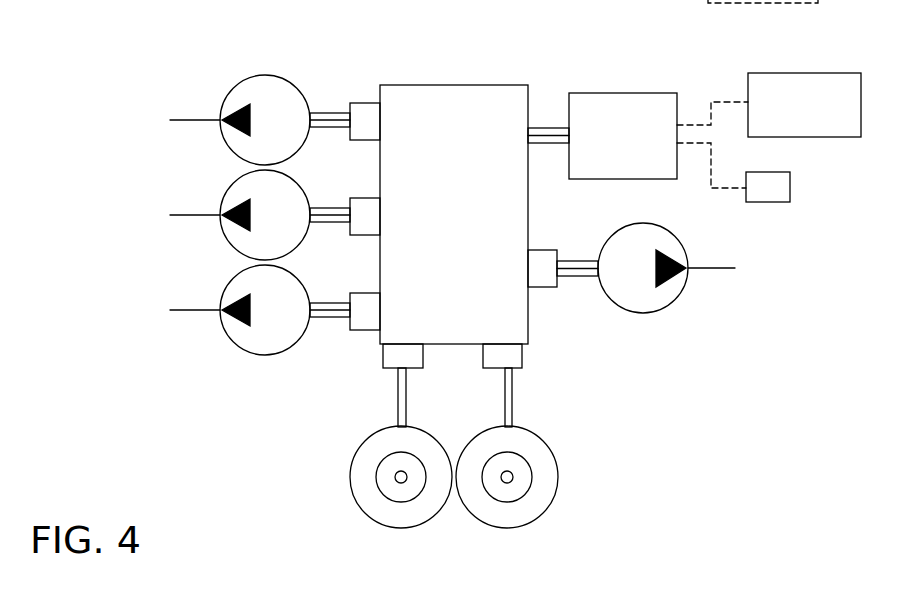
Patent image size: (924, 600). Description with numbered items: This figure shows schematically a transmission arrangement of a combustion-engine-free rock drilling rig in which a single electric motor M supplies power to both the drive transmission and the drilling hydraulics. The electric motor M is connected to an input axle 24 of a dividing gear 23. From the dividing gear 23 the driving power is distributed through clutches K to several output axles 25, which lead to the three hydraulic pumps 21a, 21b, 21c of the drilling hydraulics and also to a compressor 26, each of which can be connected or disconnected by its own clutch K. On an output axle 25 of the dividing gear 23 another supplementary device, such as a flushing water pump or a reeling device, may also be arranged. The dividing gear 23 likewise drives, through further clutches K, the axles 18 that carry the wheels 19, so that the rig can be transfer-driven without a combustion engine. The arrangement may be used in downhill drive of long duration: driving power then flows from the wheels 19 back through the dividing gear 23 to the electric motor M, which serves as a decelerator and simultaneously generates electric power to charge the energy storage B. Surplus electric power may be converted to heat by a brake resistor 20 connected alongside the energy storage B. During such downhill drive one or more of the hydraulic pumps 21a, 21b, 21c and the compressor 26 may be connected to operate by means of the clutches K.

The axle 18 is at (398, 403).
The wheels 19 is at (380, 512).
The brake resistor 20 is at (766, 192).
The hydraulic pump 21a is at (243, 95).
The hydraulic pump 21b is at (243, 190).
The hydraulic pump 21c is at (243, 285).
The dividing gear 23 is at (454, 214).
The input axle 24 is at (549, 118).
The output axles 25 is at (313, 100).
The compressor 26 is at (643, 300).
The clutches K is at (366, 110).
The electric motor M is at (623, 136).
The energy storage B is at (804, 105).